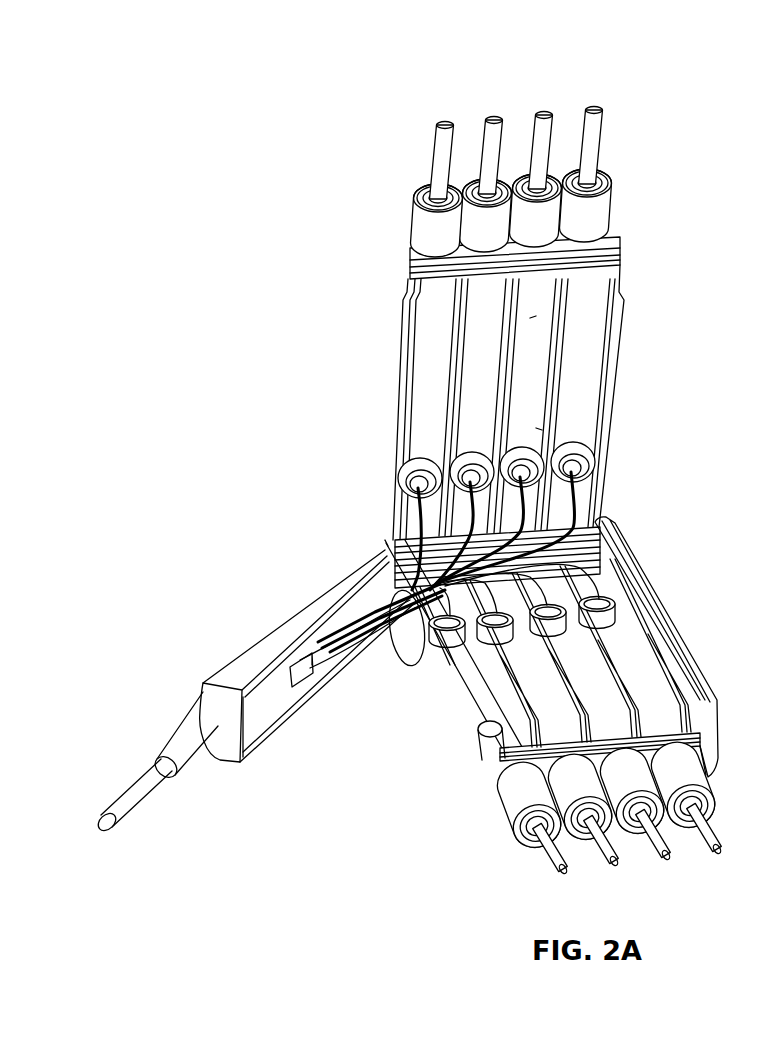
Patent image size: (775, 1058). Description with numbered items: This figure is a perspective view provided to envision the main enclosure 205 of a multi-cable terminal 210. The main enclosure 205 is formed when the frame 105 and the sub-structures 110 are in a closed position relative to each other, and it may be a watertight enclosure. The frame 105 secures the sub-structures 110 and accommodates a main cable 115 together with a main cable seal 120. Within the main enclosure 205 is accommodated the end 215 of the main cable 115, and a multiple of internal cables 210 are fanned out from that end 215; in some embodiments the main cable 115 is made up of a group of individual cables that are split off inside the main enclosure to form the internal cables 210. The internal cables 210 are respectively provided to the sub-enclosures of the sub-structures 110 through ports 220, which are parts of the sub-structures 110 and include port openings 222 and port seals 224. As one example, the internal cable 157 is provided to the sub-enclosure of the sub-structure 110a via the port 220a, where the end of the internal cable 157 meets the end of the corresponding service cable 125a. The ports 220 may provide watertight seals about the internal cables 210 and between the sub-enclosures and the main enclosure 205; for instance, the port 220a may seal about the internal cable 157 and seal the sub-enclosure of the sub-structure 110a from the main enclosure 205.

The internal cables 210 is at (416, 86).
The service cable 125a is at (575, 119).
The sub-structure 110a is at (537, 313).
The sub-structures 110 is at (518, 295).
The ports 220 is at (541, 534).
The port 220a is at (536, 430).
The port openings 222 is at (414, 478).
The internal cable 157 is at (520, 512).
The port seals 224 is at (418, 490).
The frame 105 is at (304, 619).
The end of main cable 215 is at (264, 682).
The main cable seal 120 is at (180, 730).
The main cable 115 is at (157, 787).
The main enclosure 205 is at (531, 681).